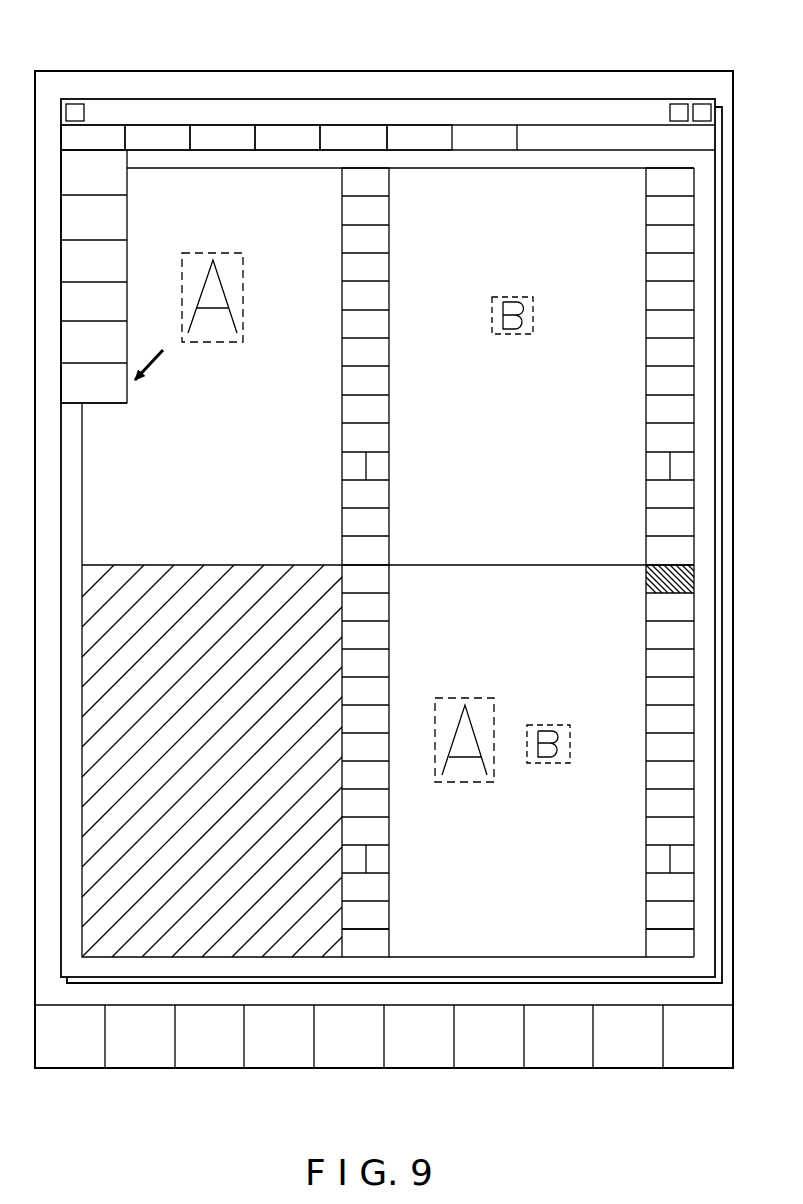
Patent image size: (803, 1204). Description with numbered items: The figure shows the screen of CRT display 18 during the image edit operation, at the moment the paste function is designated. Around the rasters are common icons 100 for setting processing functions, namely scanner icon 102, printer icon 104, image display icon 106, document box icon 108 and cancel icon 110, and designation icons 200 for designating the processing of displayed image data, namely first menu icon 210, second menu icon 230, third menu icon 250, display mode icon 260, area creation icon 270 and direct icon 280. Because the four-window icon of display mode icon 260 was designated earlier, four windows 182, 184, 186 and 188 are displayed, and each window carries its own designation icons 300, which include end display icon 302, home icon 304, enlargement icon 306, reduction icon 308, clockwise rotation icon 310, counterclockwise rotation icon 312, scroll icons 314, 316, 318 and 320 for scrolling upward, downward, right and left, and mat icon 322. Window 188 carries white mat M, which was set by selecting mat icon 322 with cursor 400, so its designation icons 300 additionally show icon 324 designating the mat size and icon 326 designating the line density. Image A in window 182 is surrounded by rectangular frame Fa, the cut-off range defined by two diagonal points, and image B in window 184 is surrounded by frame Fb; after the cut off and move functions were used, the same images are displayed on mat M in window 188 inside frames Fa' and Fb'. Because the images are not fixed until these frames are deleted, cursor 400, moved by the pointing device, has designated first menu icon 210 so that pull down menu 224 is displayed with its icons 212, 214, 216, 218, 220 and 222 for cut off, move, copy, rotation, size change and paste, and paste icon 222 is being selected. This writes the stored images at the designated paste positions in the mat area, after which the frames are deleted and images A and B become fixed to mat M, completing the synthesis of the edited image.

The CRT display 18 is at (619, 71).
The common icons 100 is at (388, 1072).
The scanner icon 102 is at (68, 1069).
The printer icon 104 is at (138, 1069).
The image display icon 106 is at (205, 1069).
The document box icon 108 is at (275, 1069).
The cancel icon 110 is at (700, 1069).
The window 182 is at (250, 168).
The window 184 is at (550, 168).
The window 186 is at (130, 958).
The window 188 is at (610, 958).
The designation icons 200 is at (333, 115).
The menu 1 icon 210 is at (109, 123).
The cut off icon 212 is at (128, 185).
The move icon 214 is at (128, 211).
The copy icon 216 is at (128, 246).
The rotation icon 218 is at (128, 305).
The size change icon 220 is at (128, 348).
The paste icon 222 is at (115, 404).
The pull down menu 224 is at (178, 278).
The menu 2 icon 230 is at (174, 123).
The menu 3 icon 250 is at (222, 123).
The display mode icon 260 is at (297, 123).
The area creation icon 270 is at (366, 123).
The direct icon 280 is at (443, 123).
The designation icons 300 is at (338, 366).
The end display icon 302 is at (389, 184).
The home icon 304 is at (389, 213).
The enlargement icon 306 is at (389, 241).
The reduction icon 308 is at (389, 269).
The clockwise rotation icon 310 is at (389, 298).
The counterclockwise rotation icon 312 is at (389, 326).
The scroll icon 314 is at (389, 354).
The scroll icon 316 is at (389, 383).
The scroll icon 318 is at (389, 411).
The scroll icon 320 is at (389, 439).
The mat icon 322 is at (389, 496).
The mat size icon 324 is at (694, 914).
The line density icon 326 is at (694, 942).
The cursor 400 is at (163, 350).
The rectangular frame Fa is at (232, 277).
The frame Fb is at (524, 294).
The frame Fa' is at (467, 712).
The frame Fb' is at (561, 721).
The mat M is at (530, 585).